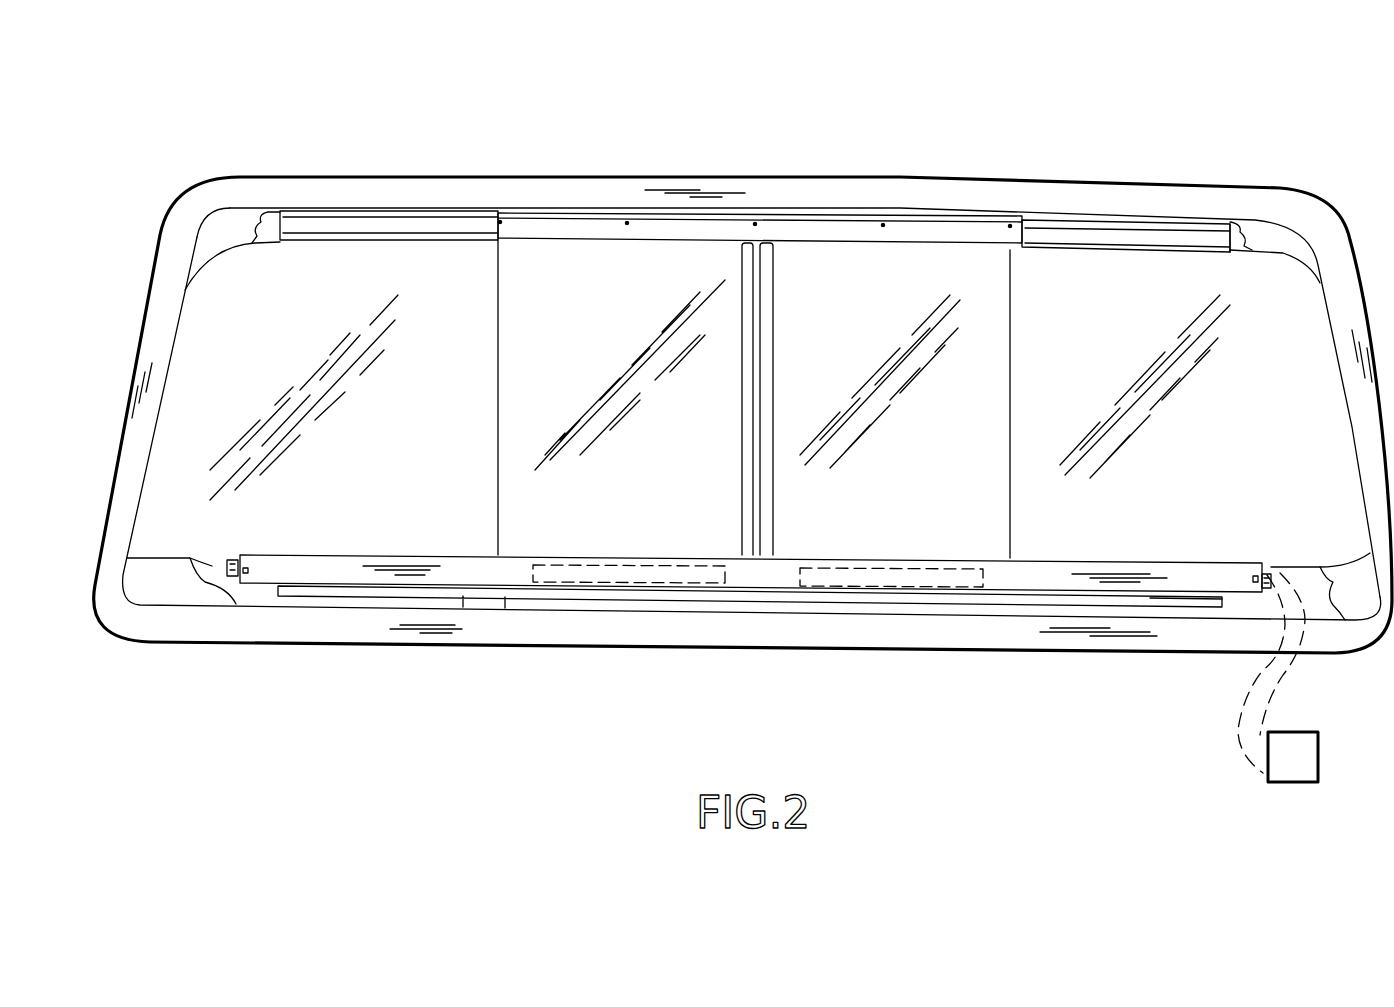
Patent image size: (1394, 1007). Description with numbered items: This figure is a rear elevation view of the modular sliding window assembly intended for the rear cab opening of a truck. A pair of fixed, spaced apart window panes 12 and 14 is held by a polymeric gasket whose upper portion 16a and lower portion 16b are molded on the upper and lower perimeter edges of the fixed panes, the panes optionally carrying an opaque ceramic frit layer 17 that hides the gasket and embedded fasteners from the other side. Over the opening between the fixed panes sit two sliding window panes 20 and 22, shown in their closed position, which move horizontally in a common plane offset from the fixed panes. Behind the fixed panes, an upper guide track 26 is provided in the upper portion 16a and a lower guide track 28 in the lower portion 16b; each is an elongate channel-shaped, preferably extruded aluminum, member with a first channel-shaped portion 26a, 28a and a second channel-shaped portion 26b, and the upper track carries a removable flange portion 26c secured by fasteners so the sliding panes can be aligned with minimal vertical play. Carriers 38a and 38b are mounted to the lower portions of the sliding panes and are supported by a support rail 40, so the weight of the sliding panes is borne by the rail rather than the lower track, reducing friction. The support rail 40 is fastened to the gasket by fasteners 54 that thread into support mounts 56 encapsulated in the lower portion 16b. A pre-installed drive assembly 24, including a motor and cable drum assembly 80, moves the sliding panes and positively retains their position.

The fixed window pane 12 is at (1082, 270).
The fixed window pane 14 is at (377, 275).
The upper portion of polymeric member 16a is at (270, 188).
The lower portion of polymeric member 16b is at (165, 570).
The ceramic frit layer 17 is at (268, 245).
The sliding window pane 20 is at (835, 275).
The sliding window pane 22 is at (652, 268).
The drive assembly 24 is at (1232, 742).
The upper guide track 26 is at (463, 210).
The first channel-shaped portion of upper track 26a is at (1148, 220).
The second channel-shaped portion of upper track 26b is at (1193, 237).
The removable flange portion 26c is at (570, 227).
The lower guide track 28 is at (478, 600).
The first channel-shaped portion of lower track 28a is at (1147, 600).
The carrier 38a is at (862, 579).
The carrier 38b is at (644, 576).
The support rail 40 is at (345, 572).
The fasteners 54 is at (1250, 583).
The support mounts 56 is at (247, 572).
The motor and cable drum assembly 80 is at (1296, 783).